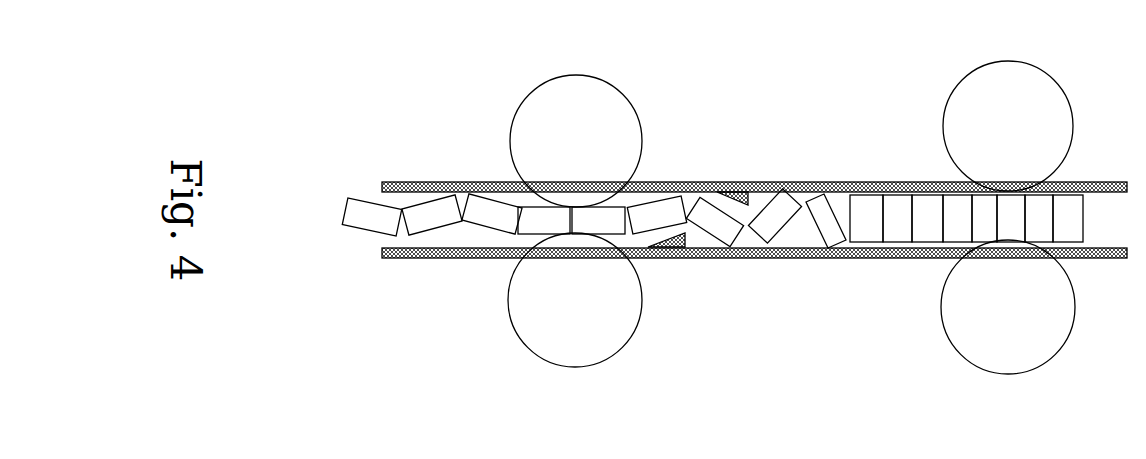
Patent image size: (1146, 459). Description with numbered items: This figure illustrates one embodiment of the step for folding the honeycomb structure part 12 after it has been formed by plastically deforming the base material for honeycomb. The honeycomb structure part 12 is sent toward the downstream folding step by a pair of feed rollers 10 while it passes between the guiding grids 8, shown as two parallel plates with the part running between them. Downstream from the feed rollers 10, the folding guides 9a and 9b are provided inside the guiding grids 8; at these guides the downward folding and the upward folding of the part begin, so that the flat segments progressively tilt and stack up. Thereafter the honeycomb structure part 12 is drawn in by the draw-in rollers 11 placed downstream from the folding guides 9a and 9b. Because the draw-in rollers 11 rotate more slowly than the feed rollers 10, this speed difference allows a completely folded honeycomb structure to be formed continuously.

The guiding grids 8 is at (400, 182).
The folding guide 9a is at (672, 258).
The folding guide 9b is at (738, 190).
The feed rollers 10 is at (578, 110).
The draw-in rollers 11 is at (1008, 110).
The honeycomb structure part 12 is at (362, 200).